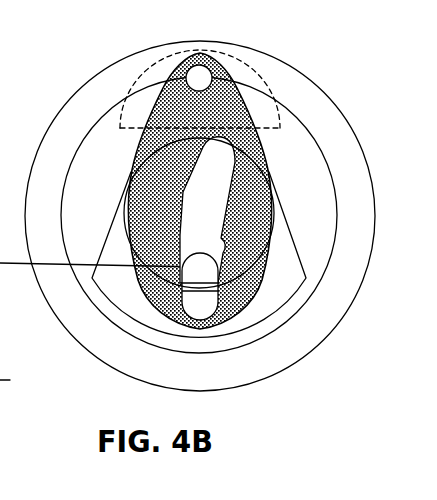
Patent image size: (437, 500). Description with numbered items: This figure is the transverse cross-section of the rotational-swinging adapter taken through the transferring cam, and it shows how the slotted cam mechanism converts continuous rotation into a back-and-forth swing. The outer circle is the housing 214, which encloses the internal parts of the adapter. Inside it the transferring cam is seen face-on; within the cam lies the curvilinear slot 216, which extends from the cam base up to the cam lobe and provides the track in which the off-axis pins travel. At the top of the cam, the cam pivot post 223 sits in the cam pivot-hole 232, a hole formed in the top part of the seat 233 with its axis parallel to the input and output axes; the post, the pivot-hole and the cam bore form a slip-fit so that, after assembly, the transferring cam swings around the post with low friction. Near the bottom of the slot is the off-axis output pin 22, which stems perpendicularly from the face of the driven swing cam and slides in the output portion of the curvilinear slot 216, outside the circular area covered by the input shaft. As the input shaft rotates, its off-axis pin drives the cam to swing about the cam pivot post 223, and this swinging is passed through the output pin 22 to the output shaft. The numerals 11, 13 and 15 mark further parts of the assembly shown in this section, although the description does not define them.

The body 11 is at (143, 137).
The slot 13 is at (127, 207).
The retainer 15 is at (120, 295).
The pin 22 is at (197, 303).
The housing 214 is at (118, 350).
The curvilinear slot 216 is at (220, 158).
The cam pivot post 223 is at (186, 78).
The cam pivot-hole 232 is at (173, 53).
The seat 233 is at (132, 117).